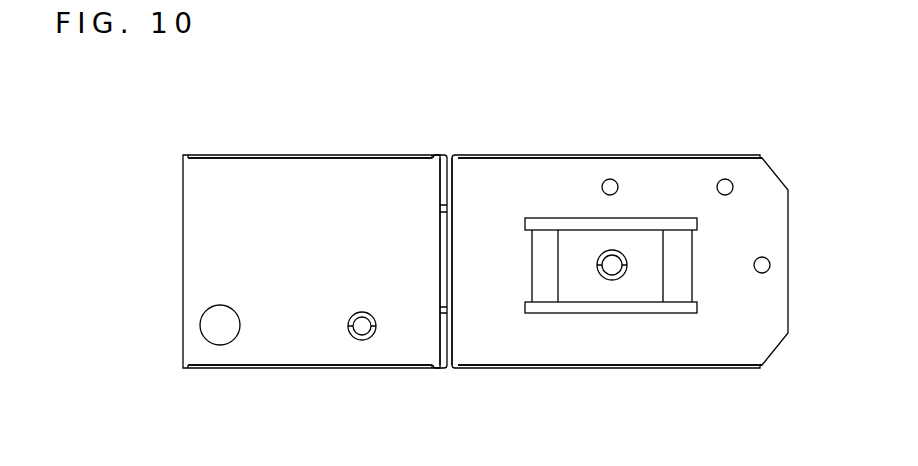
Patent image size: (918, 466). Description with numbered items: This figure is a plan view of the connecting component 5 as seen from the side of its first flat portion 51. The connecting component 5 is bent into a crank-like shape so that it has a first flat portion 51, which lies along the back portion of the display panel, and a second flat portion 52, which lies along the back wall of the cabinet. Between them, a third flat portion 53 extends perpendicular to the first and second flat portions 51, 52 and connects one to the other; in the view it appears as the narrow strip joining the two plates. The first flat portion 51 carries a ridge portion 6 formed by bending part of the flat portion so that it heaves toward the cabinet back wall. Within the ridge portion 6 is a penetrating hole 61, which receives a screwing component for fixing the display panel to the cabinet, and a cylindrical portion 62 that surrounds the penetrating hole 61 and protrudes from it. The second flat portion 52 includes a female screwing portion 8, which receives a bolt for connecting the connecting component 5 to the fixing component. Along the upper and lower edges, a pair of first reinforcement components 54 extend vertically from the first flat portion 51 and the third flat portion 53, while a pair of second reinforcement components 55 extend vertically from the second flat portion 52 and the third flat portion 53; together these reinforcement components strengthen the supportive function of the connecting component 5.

The connecting component 5 is at (734, 139).
The ridge portion 6 is at (643, 245).
The female screwing portion 8 is at (364, 312).
The first flat portion 51 is at (195, 229).
The second flat portion 52 is at (774, 228).
The third flat portion 53 is at (452, 230).
The first reinforcement component 54 is at (287, 153).
The second reinforcement component 55 is at (600, 153).
The penetrating hole 61 is at (611, 258).
The cylindrical portion 62 is at (597, 278).